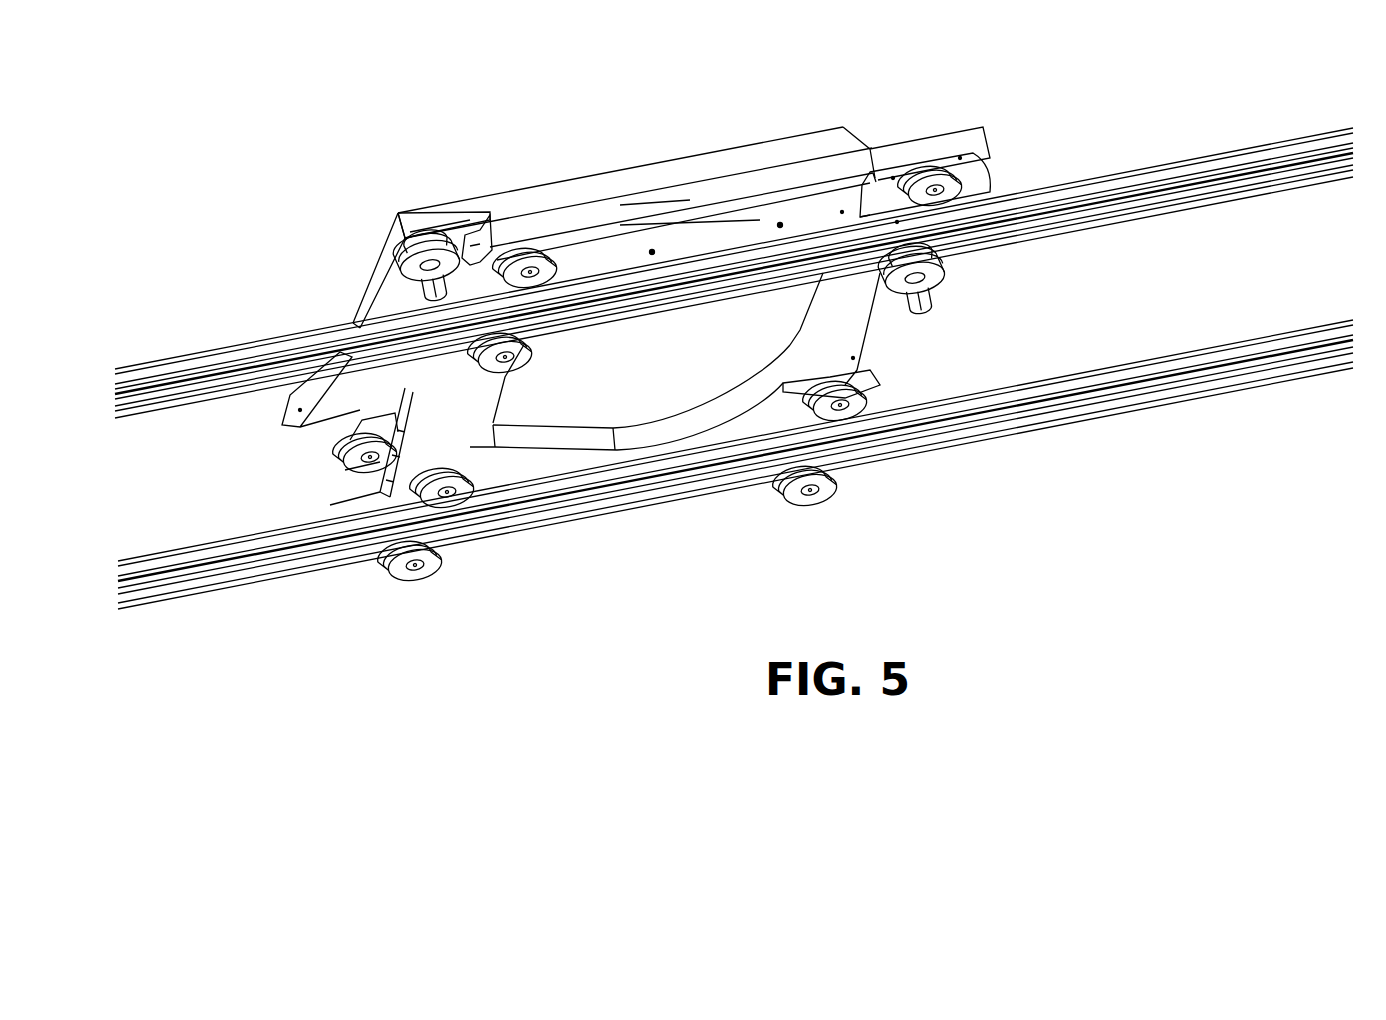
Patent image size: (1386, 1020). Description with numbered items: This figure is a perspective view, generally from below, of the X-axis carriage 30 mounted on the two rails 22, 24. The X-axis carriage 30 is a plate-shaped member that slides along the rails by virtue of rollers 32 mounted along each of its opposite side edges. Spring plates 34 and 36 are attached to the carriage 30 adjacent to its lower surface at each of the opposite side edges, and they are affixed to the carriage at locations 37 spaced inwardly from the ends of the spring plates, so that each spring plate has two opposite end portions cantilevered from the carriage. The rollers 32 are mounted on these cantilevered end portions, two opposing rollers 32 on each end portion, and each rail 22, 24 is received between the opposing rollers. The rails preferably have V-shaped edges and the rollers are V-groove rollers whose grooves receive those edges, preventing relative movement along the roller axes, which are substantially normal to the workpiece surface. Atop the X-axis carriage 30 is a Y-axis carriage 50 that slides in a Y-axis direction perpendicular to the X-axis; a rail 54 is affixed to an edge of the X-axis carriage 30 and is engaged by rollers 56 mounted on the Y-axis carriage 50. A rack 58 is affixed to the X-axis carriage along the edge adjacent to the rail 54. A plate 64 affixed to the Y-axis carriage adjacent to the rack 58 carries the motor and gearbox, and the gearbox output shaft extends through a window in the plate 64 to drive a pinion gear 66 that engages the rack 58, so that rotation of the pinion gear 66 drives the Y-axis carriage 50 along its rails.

The rail 22 is at (1240, 393).
The rail 24 is at (1180, 167).
The X-axis carriage 30 is at (858, 150).
The rollers 32 is at (548, 248).
The spring plate 34 is at (705, 440).
The spring plate 36 is at (810, 213).
The locations 37 is at (780, 225).
The Y-axis carriage 50 is at (441, 216).
The rail 54 is at (470, 240).
The rollers 56 is at (400, 276).
The rack 58 is at (377, 487).
The plate 64 is at (283, 417).
The pinion gear 66 is at (342, 453).